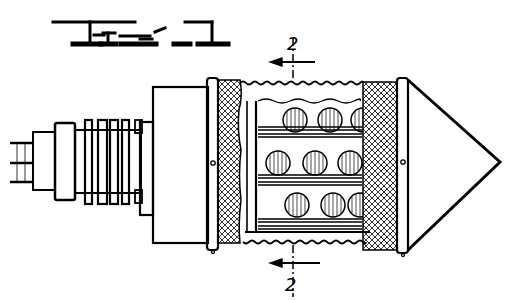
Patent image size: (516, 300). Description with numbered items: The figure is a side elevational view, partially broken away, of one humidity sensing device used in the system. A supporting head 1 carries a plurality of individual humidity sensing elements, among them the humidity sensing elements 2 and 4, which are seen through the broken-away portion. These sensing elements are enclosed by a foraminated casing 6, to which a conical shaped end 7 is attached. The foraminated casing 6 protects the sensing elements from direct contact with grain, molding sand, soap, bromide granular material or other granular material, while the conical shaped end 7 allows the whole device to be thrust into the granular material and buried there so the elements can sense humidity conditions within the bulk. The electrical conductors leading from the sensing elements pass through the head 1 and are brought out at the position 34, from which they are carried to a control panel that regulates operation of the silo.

The supporting head 1 is at (177, 220).
The humidity sensing element 2 is at (320, 100).
The humidity sensing element 4 is at (345, 228).
The foraminated casing 6 is at (227, 80).
The conical shaped end 7 is at (430, 118).
The conductor outlet position 34 is at (22, 185).